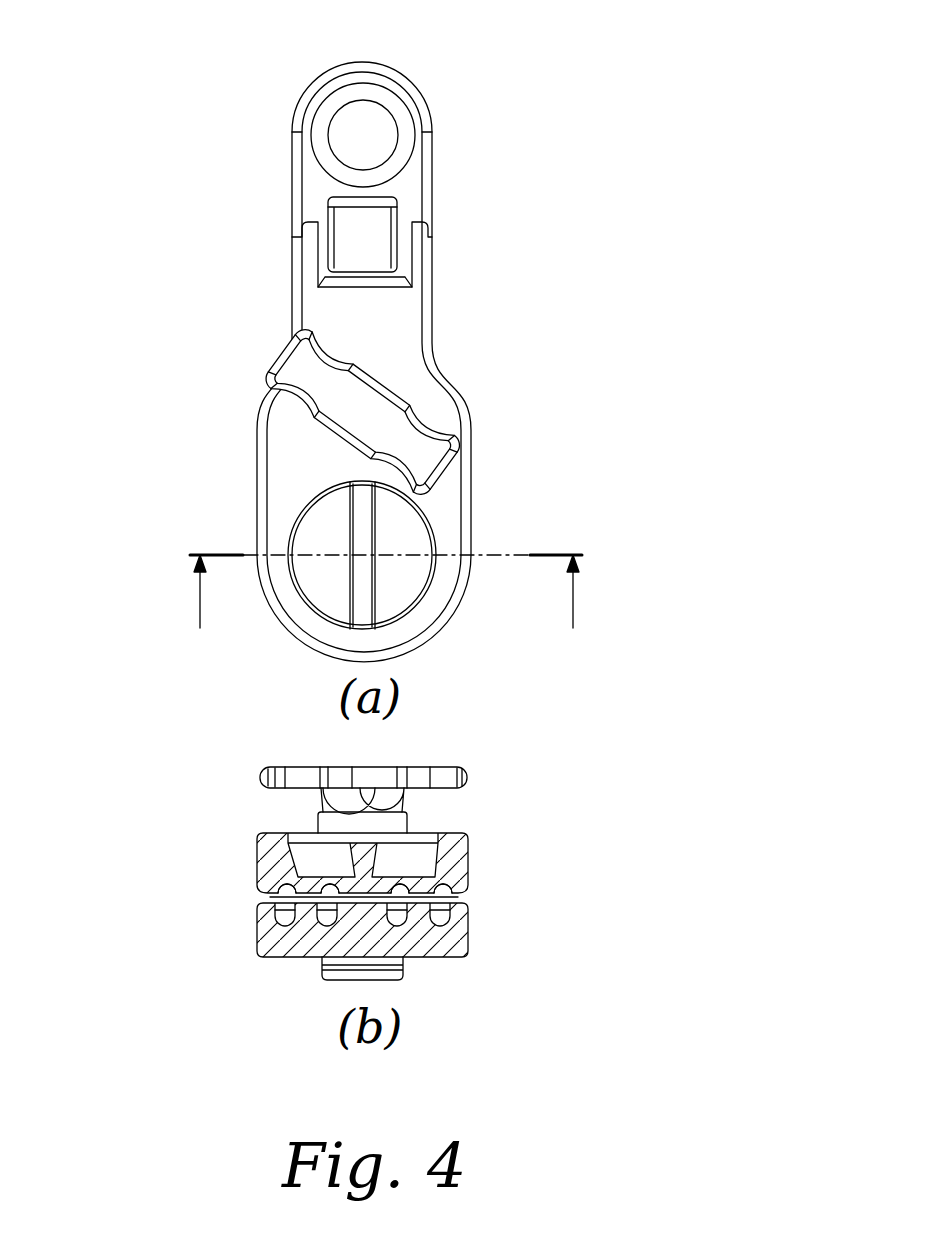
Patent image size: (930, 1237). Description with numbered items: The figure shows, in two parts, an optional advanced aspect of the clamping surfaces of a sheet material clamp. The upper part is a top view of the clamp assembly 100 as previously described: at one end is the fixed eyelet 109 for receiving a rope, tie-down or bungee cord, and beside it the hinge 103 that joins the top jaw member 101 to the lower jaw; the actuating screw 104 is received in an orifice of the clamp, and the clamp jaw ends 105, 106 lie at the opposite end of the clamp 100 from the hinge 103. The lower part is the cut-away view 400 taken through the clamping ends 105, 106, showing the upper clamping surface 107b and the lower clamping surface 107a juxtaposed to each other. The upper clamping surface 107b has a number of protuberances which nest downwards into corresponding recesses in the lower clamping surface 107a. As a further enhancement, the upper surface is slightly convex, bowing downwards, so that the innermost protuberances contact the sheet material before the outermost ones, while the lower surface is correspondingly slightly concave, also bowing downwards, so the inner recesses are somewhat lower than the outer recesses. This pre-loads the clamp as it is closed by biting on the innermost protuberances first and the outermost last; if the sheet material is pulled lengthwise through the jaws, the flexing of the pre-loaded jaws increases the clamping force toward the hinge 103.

The clamp assembly 100 is at (411, 452).
The top jaw member 101 is at (364, 362).
The hinge 103 is at (378, 217).
The actuating screw 104 is at (462, 430).
The clamping end of top jaw 105 is at (277, 617).
The clamping end of lower jaw 106 is at (470, 952).
The lower clamping surface 107a is at (472, 890).
The upper clamping surface 107b is at (256, 895).
The fixed eyelet 109 is at (383, 107).
The cut-away view 400 is at (412, 585).